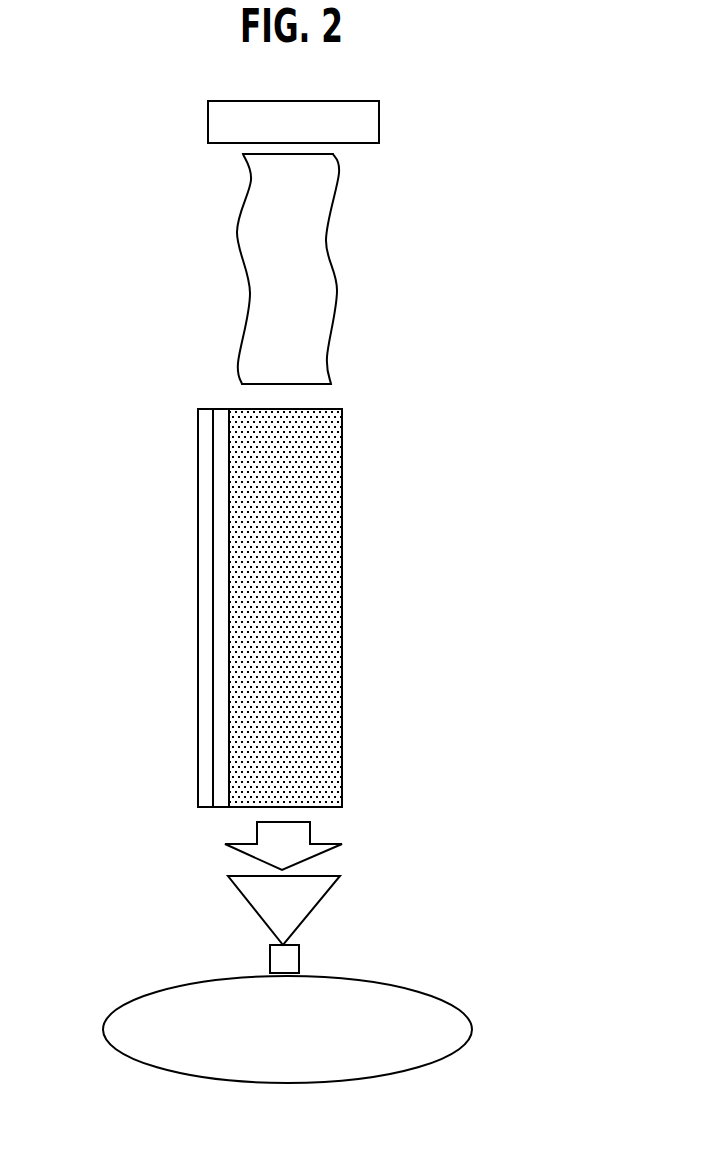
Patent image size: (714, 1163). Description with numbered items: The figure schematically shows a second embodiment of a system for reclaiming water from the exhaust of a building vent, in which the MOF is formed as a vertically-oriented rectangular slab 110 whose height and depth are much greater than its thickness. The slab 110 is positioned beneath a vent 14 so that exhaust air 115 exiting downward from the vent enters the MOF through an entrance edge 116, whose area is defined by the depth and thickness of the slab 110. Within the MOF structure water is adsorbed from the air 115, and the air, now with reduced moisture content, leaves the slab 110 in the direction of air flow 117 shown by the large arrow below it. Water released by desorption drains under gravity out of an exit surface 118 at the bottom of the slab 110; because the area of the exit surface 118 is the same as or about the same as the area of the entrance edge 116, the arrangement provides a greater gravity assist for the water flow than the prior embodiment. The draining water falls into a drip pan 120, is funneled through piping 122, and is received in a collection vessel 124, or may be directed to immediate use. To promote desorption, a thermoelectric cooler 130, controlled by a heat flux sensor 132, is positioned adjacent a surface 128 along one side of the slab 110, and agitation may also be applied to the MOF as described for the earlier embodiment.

The vent 14 is at (379, 121).
The exhaust air 115 is at (327, 242).
The MOF slab 110 is at (374, 446).
The thermoelectric cooler 130 is at (225, 409).
The heat flux sensor 132 is at (198, 623).
The surface of the MOF 128 is at (229, 737).
The entrance edge 116 is at (332, 409).
The exit surface 118 is at (323, 807).
The direction of air flow 117 is at (323, 855).
The drip pan 120 is at (322, 903).
The piping 122 is at (268, 958).
The collection vessel 124 is at (118, 1007).